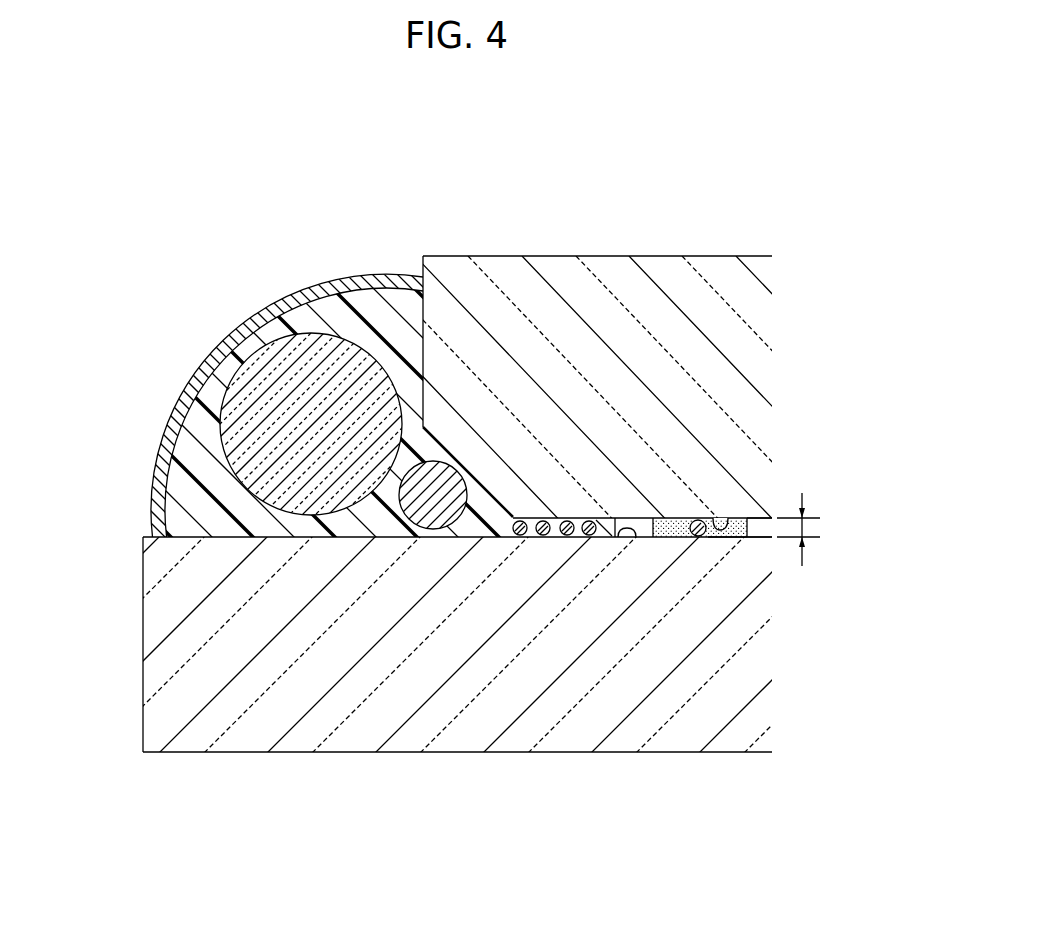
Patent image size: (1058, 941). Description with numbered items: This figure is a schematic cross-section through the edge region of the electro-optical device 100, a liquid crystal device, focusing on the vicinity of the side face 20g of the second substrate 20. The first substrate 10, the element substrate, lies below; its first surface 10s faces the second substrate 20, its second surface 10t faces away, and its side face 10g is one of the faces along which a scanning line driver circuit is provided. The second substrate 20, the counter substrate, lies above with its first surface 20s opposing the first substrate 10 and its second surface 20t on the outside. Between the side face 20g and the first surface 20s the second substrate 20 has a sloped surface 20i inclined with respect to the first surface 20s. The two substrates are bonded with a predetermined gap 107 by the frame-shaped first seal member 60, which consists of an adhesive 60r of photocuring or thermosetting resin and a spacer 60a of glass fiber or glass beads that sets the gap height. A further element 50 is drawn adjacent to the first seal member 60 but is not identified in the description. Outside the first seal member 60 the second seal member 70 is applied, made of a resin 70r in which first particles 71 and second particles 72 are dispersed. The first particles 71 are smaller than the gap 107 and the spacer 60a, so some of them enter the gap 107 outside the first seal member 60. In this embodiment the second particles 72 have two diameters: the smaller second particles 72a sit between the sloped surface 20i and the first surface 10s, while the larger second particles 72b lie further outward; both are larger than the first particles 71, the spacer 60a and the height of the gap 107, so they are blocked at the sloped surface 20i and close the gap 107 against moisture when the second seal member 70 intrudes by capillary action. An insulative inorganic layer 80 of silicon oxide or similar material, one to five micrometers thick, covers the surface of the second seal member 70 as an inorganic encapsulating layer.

The first substrate 10 is at (529, 450).
The side face 10g is at (142, 643).
The second surface 10t is at (512, 753).
The first surface 10s is at (628, 537).
The second substrate 20 is at (672, 373).
The side face 20g is at (397, 283).
The sloped surface 20i is at (458, 470).
The second surface 20t is at (727, 257).
The first surface 20s is at (718, 517).
The bonding layer 50 is at (760, 530).
The first seal member 60 is at (701, 680).
The spacer 60a is at (697, 537).
The adhesive 60r is at (732, 537).
The second seal member 70 is at (513, 450).
The resin 70r is at (221, 498).
The first particles 71 is at (520, 524).
The second particles 72 is at (484, 450).
The second particles 72a is at (433, 507).
The second particles 72b is at (307, 495).
The inorganic layer 80 is at (231, 333).
The electro-optical device 100 is at (650, 178).
The gap 107 is at (806, 527).